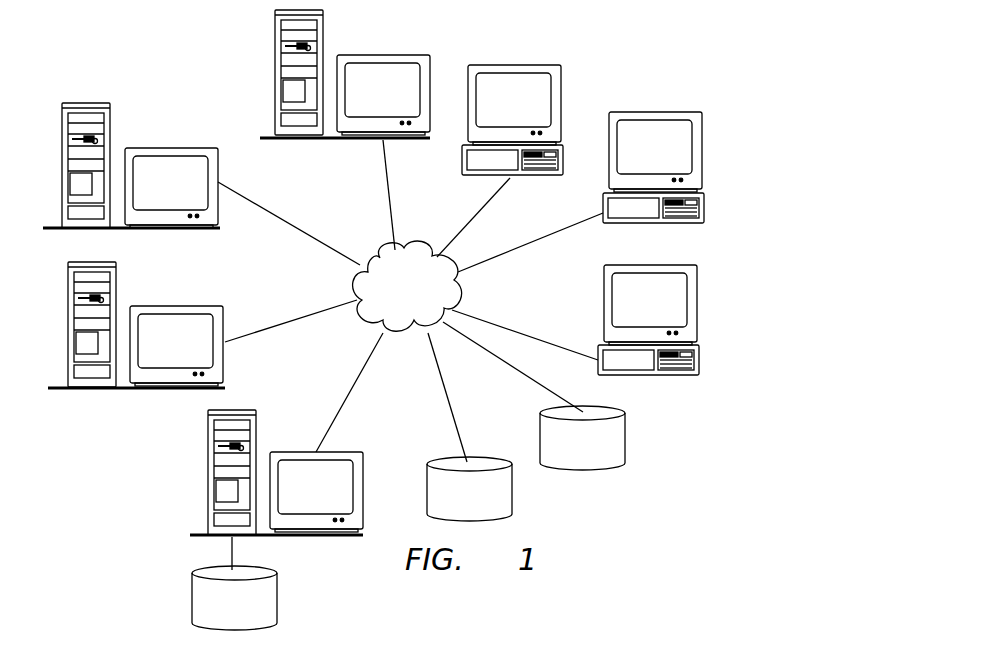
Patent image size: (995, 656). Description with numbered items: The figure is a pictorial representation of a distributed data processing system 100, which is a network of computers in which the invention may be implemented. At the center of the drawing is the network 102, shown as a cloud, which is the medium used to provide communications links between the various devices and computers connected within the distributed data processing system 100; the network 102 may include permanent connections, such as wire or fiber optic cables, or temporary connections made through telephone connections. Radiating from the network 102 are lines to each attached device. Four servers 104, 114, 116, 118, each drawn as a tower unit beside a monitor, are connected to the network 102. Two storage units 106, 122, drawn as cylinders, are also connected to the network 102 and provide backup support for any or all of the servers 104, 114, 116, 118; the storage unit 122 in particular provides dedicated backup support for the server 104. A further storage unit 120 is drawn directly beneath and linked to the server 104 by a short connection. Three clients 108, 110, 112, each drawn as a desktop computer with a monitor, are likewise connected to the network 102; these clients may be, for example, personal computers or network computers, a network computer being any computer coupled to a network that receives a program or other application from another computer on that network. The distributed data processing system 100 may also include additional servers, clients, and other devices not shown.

The distributed data processing system 100 is at (773, 122).
The network 102 is at (388, 301).
The server 104 is at (299, 501).
The storage unit 106 is at (566, 453).
The client 108 is at (495, 111).
The client 110 is at (637, 158).
The client 112 is at (633, 311).
The server 114 is at (158, 354).
The server 116 is at (153, 196).
The server 118 is at (366, 103).
The storage unit 120 is at (217, 613).
The storage unit 122 is at (452, 504).